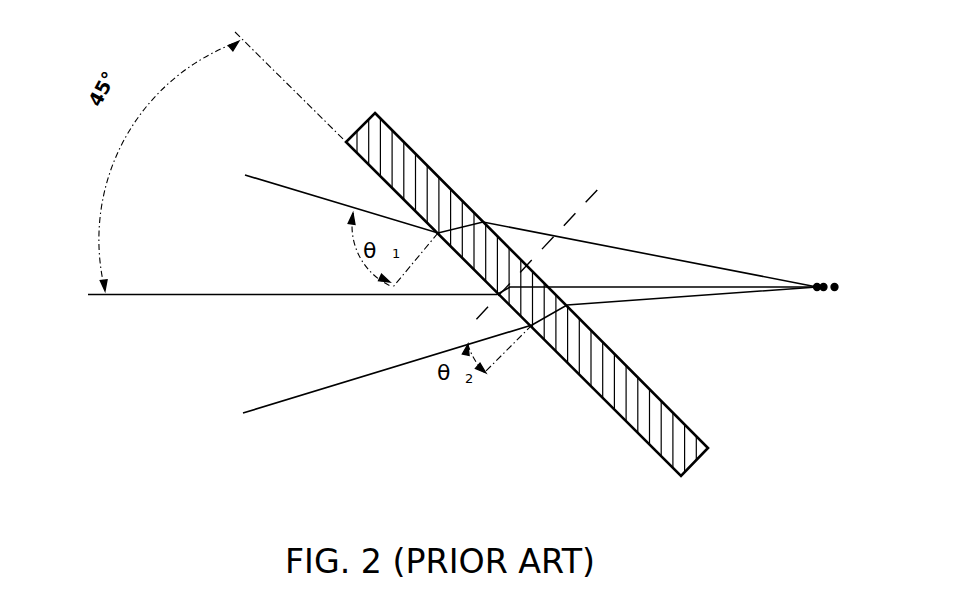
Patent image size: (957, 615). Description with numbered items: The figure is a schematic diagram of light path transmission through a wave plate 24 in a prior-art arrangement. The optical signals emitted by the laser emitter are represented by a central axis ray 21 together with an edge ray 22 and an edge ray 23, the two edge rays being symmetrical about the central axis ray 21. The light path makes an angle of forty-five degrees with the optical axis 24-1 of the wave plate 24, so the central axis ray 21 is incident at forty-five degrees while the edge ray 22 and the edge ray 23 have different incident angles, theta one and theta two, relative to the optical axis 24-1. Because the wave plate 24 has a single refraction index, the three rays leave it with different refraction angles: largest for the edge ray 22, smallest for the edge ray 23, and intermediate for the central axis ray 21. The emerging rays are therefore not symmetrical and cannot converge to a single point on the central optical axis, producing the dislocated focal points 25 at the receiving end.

The central axis ray 21 is at (122, 296).
The edge ray 22 is at (257, 176).
The edge ray 23 is at (312, 393).
The wave plate 24 is at (423, 173).
The optical axis of the wave plate 24-1 is at (571, 202).
The focal points 25 is at (822, 278).